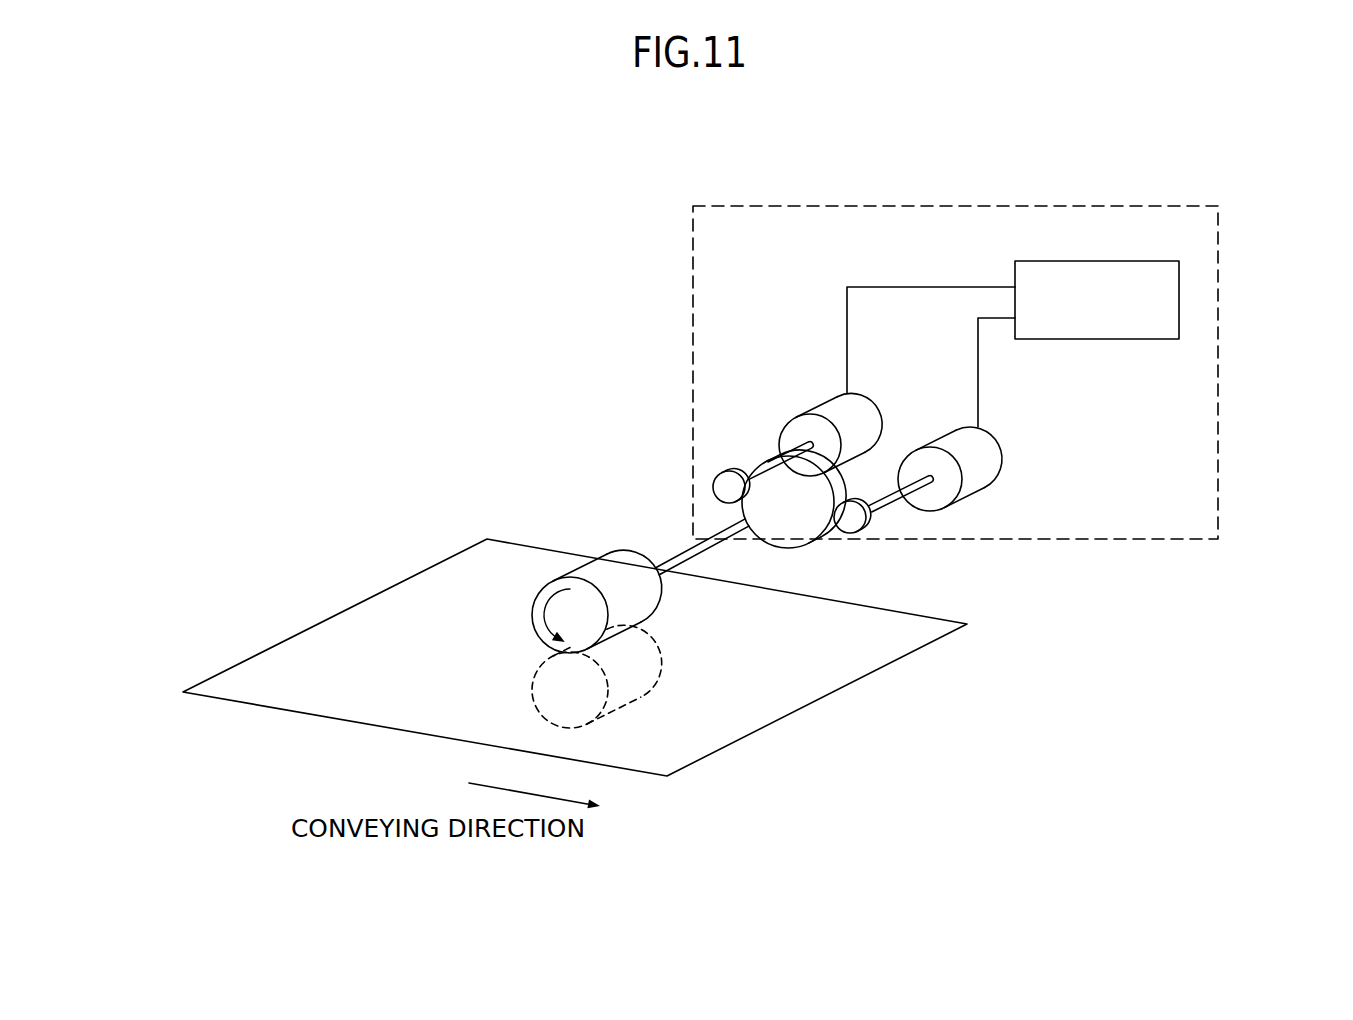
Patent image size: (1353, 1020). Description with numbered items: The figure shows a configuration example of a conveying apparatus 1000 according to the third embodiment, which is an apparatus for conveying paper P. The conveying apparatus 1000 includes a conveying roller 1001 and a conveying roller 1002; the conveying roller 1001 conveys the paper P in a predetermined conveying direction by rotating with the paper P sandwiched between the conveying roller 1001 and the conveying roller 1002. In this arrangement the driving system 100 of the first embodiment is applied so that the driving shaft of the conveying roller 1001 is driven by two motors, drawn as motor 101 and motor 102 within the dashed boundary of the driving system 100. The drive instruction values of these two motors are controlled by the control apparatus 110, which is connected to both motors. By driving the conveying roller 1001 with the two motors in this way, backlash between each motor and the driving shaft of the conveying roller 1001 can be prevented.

The driving system 100 is at (1140, 205).
The control apparatus 110 is at (1097, 262).
The first motor 101 is at (882, 410).
The second motor 102 is at (988, 453).
The conveying apparatus 1000 is at (528, 438).
The conveying roller 1001 is at (640, 610).
The conveying roller 1002 is at (630, 697).
The paper P is at (928, 628).